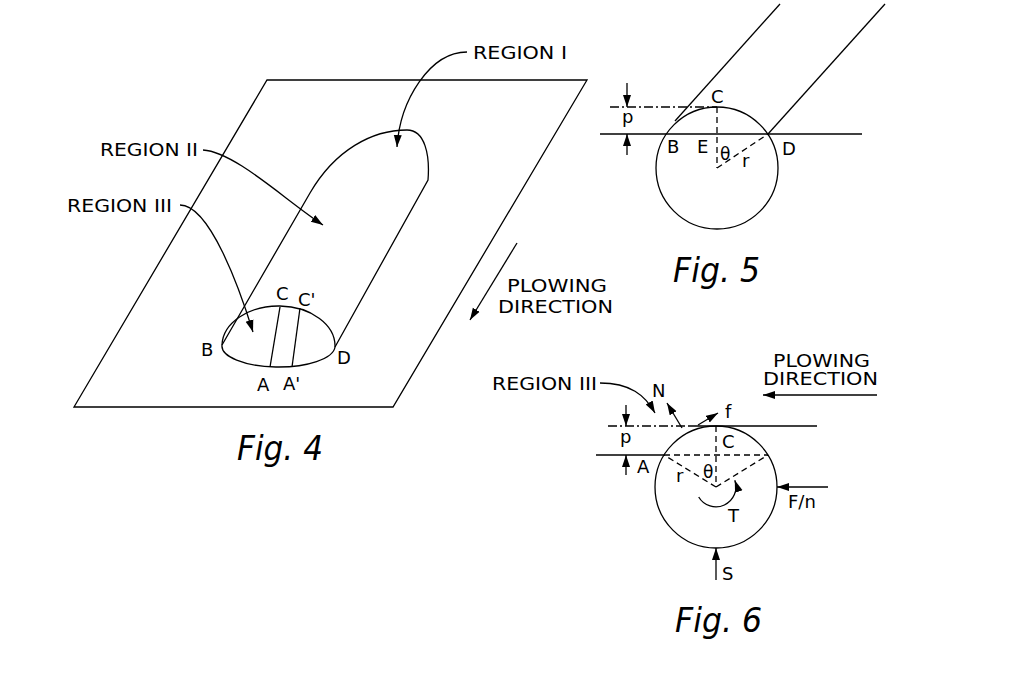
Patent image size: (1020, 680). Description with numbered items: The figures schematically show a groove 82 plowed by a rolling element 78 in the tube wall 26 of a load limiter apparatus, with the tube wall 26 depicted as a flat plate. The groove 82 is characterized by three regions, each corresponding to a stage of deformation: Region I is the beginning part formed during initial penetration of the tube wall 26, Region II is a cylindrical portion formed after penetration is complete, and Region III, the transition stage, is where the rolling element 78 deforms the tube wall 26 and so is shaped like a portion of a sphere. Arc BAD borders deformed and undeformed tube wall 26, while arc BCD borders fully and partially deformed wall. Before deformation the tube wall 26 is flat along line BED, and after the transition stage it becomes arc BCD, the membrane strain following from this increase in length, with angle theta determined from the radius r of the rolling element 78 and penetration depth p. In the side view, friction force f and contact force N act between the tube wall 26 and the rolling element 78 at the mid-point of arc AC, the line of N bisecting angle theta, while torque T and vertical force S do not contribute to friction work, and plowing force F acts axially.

In FIG. 4, the tube wall 26 is at (310, 113).
In FIG. 5, the tube wall 26 is at (810, 117).
In FIG. 6, the tube wall 26 is at (606, 454).
In FIG. 4, the groove 82 is at (327, 203).
In FIG. 5, the groove 82 is at (803, 47).
In FIG. 6, the groove 82 is at (797, 425).
In FIG. 5, the rolling element 78 is at (747, 190).
In FIG. 6, the rolling element 78 is at (687, 510).